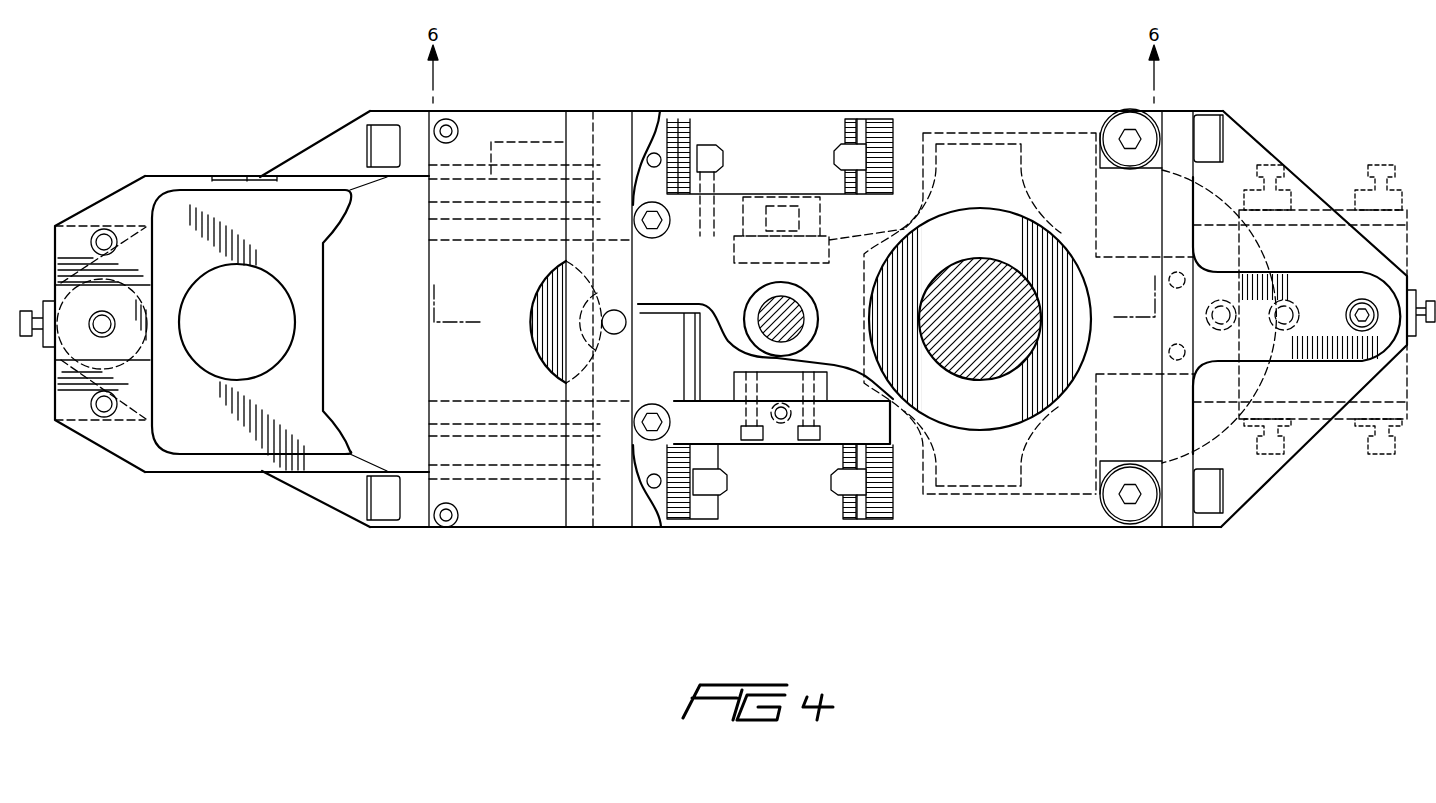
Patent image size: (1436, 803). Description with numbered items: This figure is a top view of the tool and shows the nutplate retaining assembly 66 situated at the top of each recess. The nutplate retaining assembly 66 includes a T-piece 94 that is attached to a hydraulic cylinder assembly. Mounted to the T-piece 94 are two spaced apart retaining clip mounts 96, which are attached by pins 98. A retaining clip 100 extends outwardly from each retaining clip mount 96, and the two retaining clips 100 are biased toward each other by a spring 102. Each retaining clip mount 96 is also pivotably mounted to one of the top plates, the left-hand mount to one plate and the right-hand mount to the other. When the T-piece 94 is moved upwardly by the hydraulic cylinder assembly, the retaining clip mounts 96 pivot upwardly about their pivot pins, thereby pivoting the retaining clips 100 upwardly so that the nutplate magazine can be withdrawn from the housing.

The nutplate retaining assembly 66 is at (692, 529).
The T-piece 94 is at (734, 197).
The retaining clip mount 96 is at (877, 130).
The pin 98 is at (861, 461).
The retaining clip 100 is at (838, 145).
The spring 102 is at (884, 147).